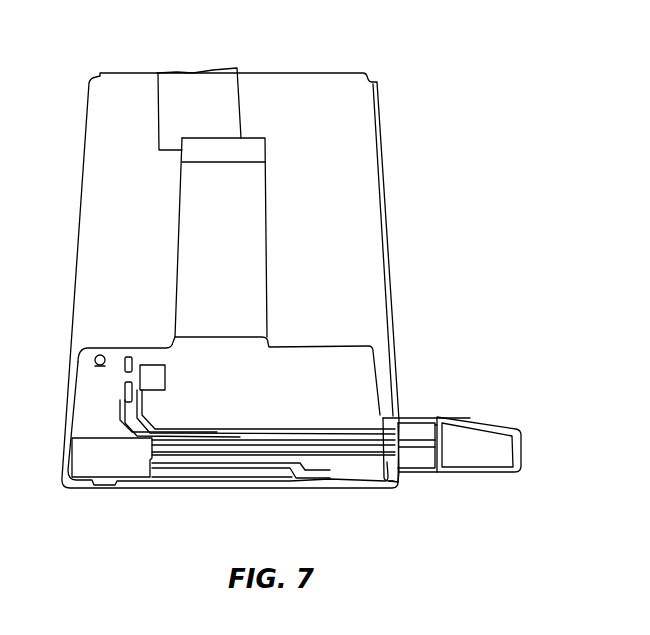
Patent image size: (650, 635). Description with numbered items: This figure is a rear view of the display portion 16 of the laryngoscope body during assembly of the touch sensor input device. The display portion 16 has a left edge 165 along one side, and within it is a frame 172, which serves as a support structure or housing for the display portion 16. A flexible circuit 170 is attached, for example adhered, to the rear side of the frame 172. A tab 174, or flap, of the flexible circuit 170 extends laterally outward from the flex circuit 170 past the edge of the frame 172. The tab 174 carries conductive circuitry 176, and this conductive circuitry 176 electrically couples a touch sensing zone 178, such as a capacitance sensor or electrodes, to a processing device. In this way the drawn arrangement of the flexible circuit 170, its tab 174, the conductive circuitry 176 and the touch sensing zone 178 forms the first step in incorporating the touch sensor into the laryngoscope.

The display portion 16 is at (403, 76).
The left edge 165 is at (386, 146).
The frame 172 is at (358, 255).
The flexible circuit 170 is at (357, 370).
The conductive circuitry 176 is at (410, 438).
The touch sensing zone 178 is at (480, 447).
The tab 174 is at (415, 473).